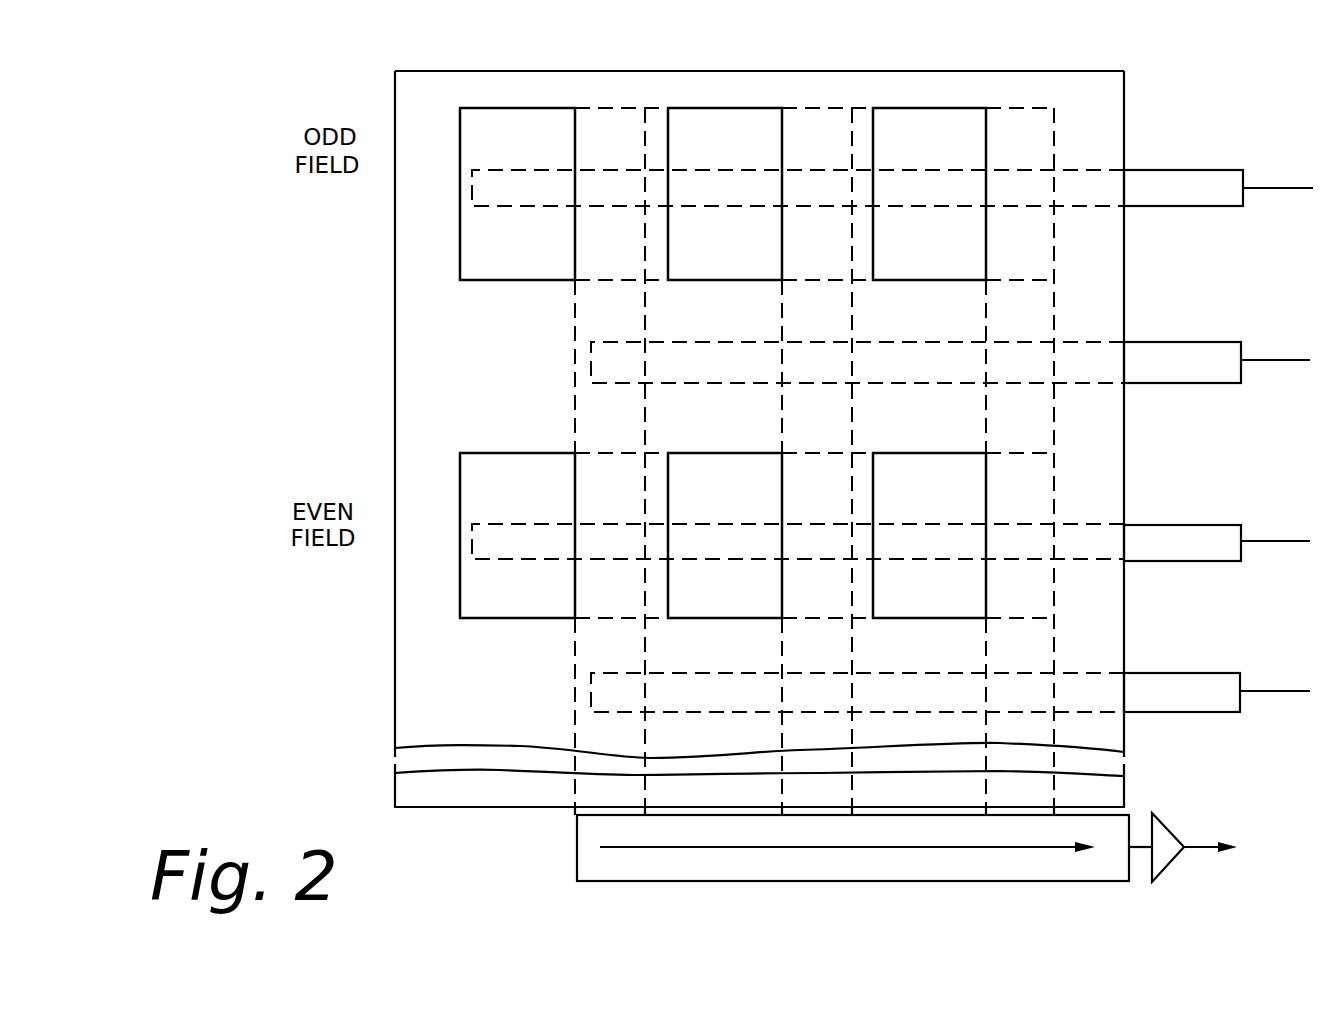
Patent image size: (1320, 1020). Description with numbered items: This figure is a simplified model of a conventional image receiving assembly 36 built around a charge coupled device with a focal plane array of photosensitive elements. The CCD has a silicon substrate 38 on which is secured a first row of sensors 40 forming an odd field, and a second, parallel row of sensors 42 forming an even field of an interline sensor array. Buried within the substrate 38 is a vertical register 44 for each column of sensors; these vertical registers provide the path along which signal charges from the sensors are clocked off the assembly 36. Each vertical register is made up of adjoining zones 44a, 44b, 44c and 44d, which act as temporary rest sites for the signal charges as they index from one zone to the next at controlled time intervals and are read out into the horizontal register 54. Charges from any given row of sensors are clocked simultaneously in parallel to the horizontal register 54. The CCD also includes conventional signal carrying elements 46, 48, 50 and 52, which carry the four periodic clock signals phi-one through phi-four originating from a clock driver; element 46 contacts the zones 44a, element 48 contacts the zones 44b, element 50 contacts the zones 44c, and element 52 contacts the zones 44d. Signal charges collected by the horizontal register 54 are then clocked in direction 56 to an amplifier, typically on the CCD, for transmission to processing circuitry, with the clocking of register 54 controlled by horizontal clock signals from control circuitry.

The image receiving assembly 36 is at (1024, 74).
The silicon substrate 38 is at (663, 72).
The first row of sensors 40 is at (487, 118).
The second row of sensors 42 is at (505, 460).
The vertical register 44 is at (594, 118).
The zone 44a is at (1054, 228).
The zone 44b is at (575, 290).
The zone 44c is at (1054, 462).
The zone 44d is at (575, 668).
The signal carrying element 46 is at (1200, 178).
The signal carrying element 48 is at (1213, 378).
The signal carrying element 50 is at (1197, 545).
The signal carrying element 52 is at (1195, 700).
The horizontal register 54 is at (593, 868).
The direction 56 is at (1020, 848).